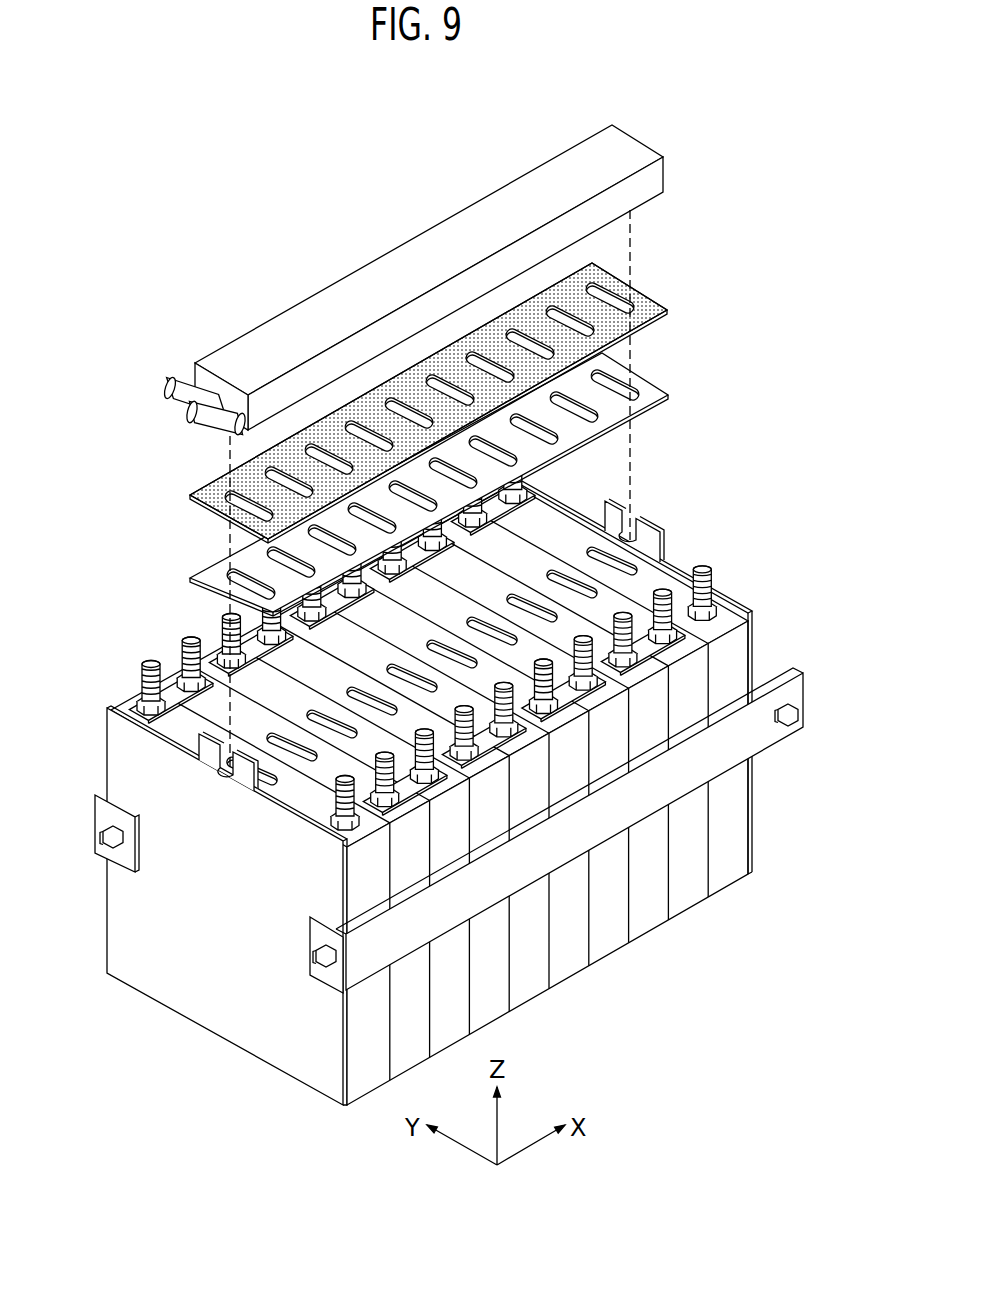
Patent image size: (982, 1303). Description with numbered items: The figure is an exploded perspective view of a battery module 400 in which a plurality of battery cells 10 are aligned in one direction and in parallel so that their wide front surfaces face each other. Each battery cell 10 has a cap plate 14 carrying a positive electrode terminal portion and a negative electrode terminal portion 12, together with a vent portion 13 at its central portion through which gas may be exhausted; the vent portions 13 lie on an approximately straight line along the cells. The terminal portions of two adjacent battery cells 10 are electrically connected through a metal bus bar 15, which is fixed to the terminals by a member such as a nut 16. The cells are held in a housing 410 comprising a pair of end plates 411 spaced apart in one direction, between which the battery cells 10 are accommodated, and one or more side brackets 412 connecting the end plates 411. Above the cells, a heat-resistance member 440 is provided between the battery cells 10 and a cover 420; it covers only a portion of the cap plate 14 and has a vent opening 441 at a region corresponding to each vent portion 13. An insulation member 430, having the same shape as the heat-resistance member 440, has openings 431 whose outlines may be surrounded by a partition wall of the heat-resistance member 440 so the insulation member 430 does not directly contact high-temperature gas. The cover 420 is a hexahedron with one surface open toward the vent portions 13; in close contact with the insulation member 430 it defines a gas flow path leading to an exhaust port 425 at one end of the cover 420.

The battery module 400 is at (170, 188).
The battery cell 10 is at (460, 798).
The negative electrode terminal portion 12 is at (708, 566).
The vent portion 13 is at (612, 560).
The cap plate 14 is at (727, 623).
The bus bar 15 is at (177, 690).
The nut 16 is at (140, 698).
The housing 410 is at (449, 907).
The end plate 411 is at (153, 917).
The side bracket 412 is at (330, 975).
The cover 420 is at (630, 147).
The exhaust port 425 is at (166, 384).
The insulation member 430 is at (460, 378).
The opening 431 is at (605, 290).
The heat-resistance member 440 is at (465, 467).
The vent opening 441 is at (617, 376).